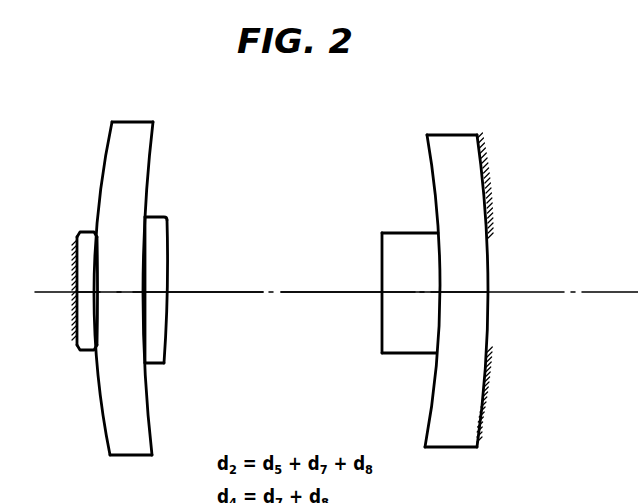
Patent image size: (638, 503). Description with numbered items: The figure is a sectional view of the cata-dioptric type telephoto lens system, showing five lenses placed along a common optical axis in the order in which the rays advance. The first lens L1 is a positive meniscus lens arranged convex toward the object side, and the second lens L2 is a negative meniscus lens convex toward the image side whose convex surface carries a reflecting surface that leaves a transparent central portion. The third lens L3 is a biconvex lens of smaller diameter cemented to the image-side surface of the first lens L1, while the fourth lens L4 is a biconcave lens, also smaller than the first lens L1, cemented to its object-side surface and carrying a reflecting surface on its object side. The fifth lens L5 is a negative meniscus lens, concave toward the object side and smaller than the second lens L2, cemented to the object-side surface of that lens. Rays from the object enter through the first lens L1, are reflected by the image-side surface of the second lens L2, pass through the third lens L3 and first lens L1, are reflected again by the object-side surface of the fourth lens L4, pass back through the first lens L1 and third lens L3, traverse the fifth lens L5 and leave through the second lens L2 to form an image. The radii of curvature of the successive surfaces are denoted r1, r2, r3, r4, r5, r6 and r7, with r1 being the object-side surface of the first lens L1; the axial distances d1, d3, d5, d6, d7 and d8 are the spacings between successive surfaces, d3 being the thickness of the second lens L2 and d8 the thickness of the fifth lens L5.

The first lens L1 is at (125, 128).
The second lens L2 is at (453, 142).
The third lens L3 is at (158, 223).
The fourth lens L4 is at (90, 236).
The fifth lens L5 is at (402, 242).
The radius of curvature of the object-side surface of the first lens r1 is at (108, 145).
The radius of curvature of lens surface r2 is at (153, 135).
The radius of curvature of lens surface r3 is at (427, 153).
The radius of curvature of lens surface r4 is at (488, 162).
The radius of curvature of lens surface r5 is at (167, 345).
The radius of curvature of lens surface r6 is at (76, 343).
The radius of curvature of lens surface r7 is at (382, 342).
The distance between lens surfaces d1 is at (108, 292).
The thickness of the second lens d3 is at (463, 292).
The distance between lens surfaces d5 is at (155, 292).
The distance between lens surfaces d6 is at (87, 292).
The distance between lens surfaces d7 is at (285, 292).
The thickness of the fifth lens d8 is at (410, 292).